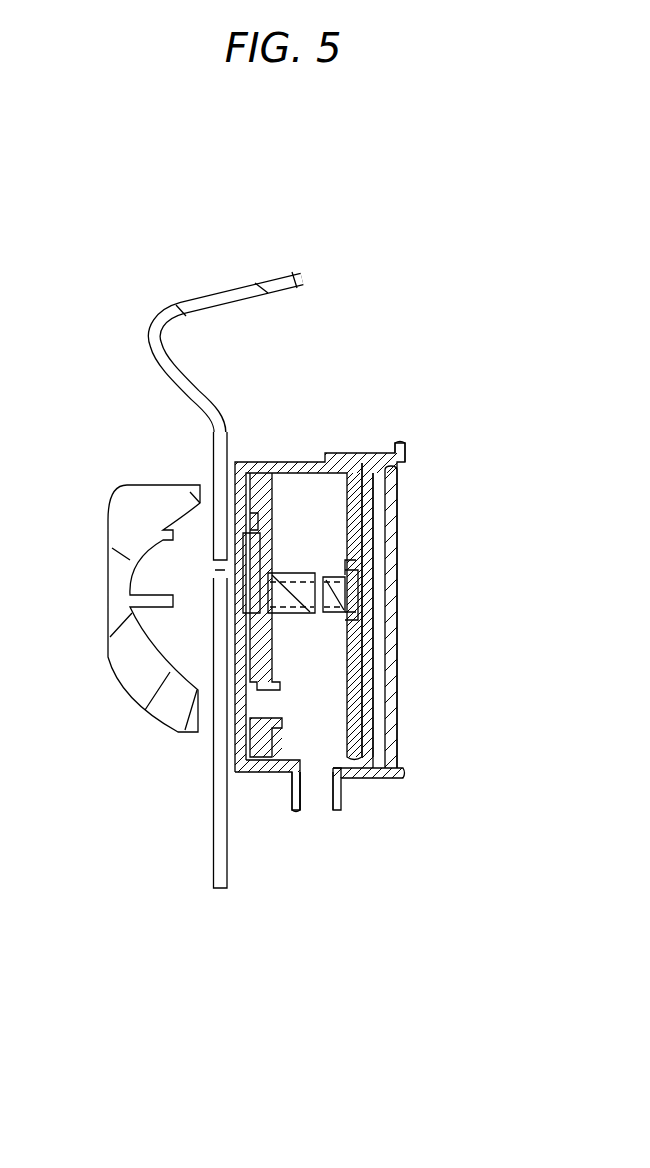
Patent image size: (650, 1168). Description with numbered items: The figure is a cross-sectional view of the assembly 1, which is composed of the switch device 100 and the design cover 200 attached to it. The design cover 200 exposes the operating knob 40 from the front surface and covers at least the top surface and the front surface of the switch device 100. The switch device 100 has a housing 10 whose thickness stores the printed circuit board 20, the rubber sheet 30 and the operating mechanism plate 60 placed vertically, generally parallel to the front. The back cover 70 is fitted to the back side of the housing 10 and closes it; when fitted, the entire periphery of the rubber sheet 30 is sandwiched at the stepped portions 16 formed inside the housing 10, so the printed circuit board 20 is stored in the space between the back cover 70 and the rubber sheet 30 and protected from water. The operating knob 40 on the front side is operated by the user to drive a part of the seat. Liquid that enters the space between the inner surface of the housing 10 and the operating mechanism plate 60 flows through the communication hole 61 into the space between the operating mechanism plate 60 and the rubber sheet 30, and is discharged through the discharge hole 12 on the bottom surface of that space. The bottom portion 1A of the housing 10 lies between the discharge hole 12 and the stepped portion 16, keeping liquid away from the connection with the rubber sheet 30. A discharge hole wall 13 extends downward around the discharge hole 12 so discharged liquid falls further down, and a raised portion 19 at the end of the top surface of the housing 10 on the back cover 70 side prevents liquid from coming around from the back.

The assembly 1 is at (251, 92).
The bottom portion 1A is at (370, 687).
The housing 10 is at (310, 460).
The discharge hole 12 is at (315, 790).
The discharge hole wall 13 is at (297, 812).
The stepped portion 16 is at (348, 462).
The raised portion 19 is at (400, 442).
The printed circuit board 20 is at (373, 695).
The rubber sheet 30 is at (362, 727).
The operating knob 40 is at (125, 490).
The operating mechanism plate 60 is at (262, 742).
The communication hole 61 is at (262, 700).
The back cover 70 is at (398, 512).
The switch device 100 is at (285, 619).
The design cover 200 is at (255, 281).